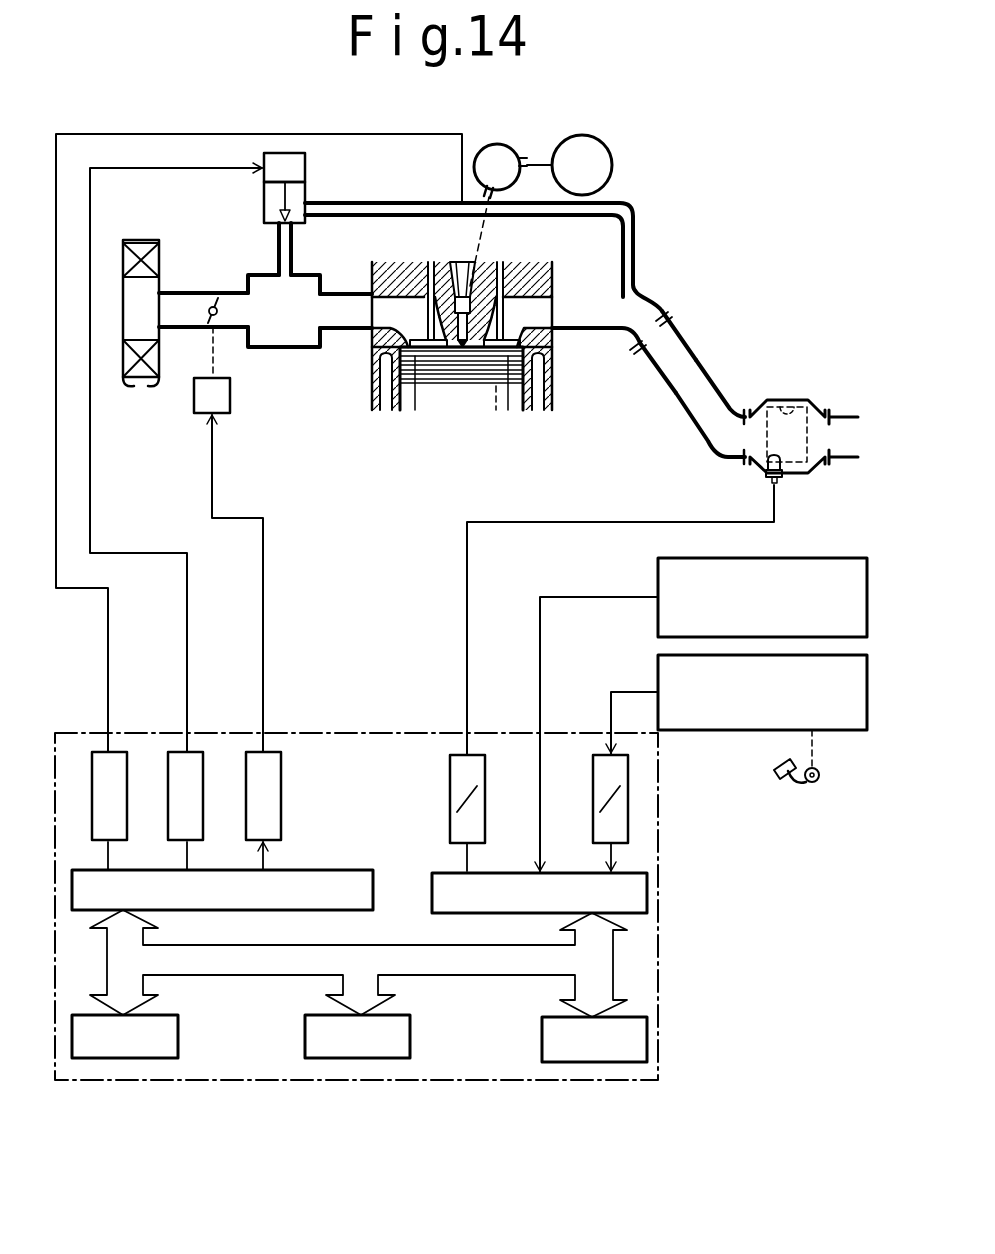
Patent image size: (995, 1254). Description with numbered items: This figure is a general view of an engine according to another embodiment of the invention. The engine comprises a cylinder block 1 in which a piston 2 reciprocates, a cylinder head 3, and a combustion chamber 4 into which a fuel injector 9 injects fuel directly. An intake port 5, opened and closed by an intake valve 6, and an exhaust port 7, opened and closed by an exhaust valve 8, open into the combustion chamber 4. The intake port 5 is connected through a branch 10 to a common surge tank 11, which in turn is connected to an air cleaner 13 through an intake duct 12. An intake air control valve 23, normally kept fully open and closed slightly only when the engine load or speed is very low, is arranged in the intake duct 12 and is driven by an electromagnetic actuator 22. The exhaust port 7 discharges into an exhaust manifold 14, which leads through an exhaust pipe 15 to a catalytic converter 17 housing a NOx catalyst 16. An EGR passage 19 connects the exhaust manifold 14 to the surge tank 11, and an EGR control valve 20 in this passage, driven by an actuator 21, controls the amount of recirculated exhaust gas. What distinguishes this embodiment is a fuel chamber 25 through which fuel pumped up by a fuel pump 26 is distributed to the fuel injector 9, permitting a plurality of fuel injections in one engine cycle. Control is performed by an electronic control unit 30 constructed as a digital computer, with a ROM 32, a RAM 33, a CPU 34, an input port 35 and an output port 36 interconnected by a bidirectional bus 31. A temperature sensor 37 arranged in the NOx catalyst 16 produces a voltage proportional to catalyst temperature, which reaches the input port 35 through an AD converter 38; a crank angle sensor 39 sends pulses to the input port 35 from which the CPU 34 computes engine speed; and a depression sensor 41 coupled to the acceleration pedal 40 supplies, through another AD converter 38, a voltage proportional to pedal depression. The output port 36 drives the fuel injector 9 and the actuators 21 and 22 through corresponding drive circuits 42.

The cylinder block 1 is at (550, 384).
The piston 2 is at (490, 402).
The cylinder head 3 is at (557, 267).
The combustion chamber 4 is at (522, 351).
The intake port 5 is at (377, 312).
The intake valve 6 is at (423, 267).
The exhaust port 7 is at (547, 313).
The exhaust valve 8 is at (504, 270).
The fuel injector 9 is at (457, 267).
The branch 10 is at (350, 329).
The surge tank 11 is at (307, 348).
The intake duct 12 is at (230, 292).
The air cleaner 13 is at (132, 239).
The exhaust manifold 14 is at (657, 312).
The exhaust pipe 15 is at (700, 373).
The NOx catalyst 16 is at (782, 405).
The catalytic converter 17 is at (812, 403).
The EGR passage 19 is at (636, 246).
The EGR control valve 20 is at (262, 193).
The actuator 21 is at (307, 179).
The actuator 22 is at (231, 404).
The intake air control valve 23 is at (218, 303).
The fuel chamber 25 is at (505, 146).
The fuel pump 26 is at (605, 150).
The electronic control unit 30 is at (660, 880).
The bidirectional bus 31 is at (282, 977).
The read-only memory 32 is at (182, 1042).
The random-access memory 33 is at (412, 1037).
The CPU 34 is at (542, 1030).
The input port 35 is at (432, 888).
The output port 36 is at (367, 870).
The temperature sensor 37 is at (782, 478).
The AD converter 38 is at (448, 766).
The crank angle sensor 39 is at (735, 558).
The acceleration pedal 40 is at (815, 789).
The depression sensor 41 is at (717, 730).
The drive circuit 42 is at (127, 757).